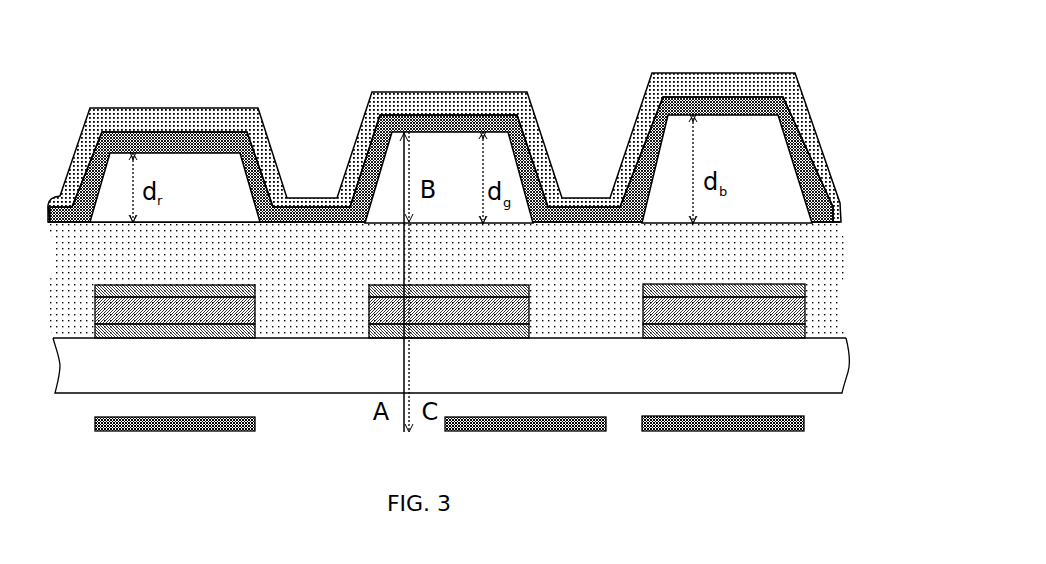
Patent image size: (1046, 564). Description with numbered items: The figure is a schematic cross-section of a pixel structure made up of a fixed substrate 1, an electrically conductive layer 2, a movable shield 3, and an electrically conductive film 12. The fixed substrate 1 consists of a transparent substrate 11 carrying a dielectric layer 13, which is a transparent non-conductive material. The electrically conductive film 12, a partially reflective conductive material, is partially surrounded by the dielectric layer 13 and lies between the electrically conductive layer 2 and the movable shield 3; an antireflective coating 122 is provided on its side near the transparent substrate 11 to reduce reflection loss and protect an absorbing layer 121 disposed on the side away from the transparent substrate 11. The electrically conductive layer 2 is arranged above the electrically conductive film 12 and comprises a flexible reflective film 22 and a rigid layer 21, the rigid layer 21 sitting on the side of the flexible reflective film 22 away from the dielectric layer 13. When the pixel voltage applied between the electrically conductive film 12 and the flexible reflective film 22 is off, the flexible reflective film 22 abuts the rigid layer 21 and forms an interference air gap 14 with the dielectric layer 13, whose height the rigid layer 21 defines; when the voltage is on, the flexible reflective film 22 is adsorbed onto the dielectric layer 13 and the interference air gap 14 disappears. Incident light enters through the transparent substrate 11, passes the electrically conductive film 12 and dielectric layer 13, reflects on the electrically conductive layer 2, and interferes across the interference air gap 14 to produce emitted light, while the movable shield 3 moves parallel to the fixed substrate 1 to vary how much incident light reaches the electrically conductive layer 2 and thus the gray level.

The fixed substrate 1 is at (500, 307).
The transparent substrate 11 is at (805, 364).
The electrically conductive film 12 is at (255, 310).
The absorbing layer 121 is at (805, 292).
The antireflective coating 122 is at (504, 327).
The dielectric layer 13 is at (810, 257).
The interference air gap 14 is at (450, 147).
The electrically conductive layer 2 is at (444, 116).
The rigid layer 21 is at (200, 127).
The flexible reflective film 22 is at (245, 50).
The movable shield 3 is at (256, 428).